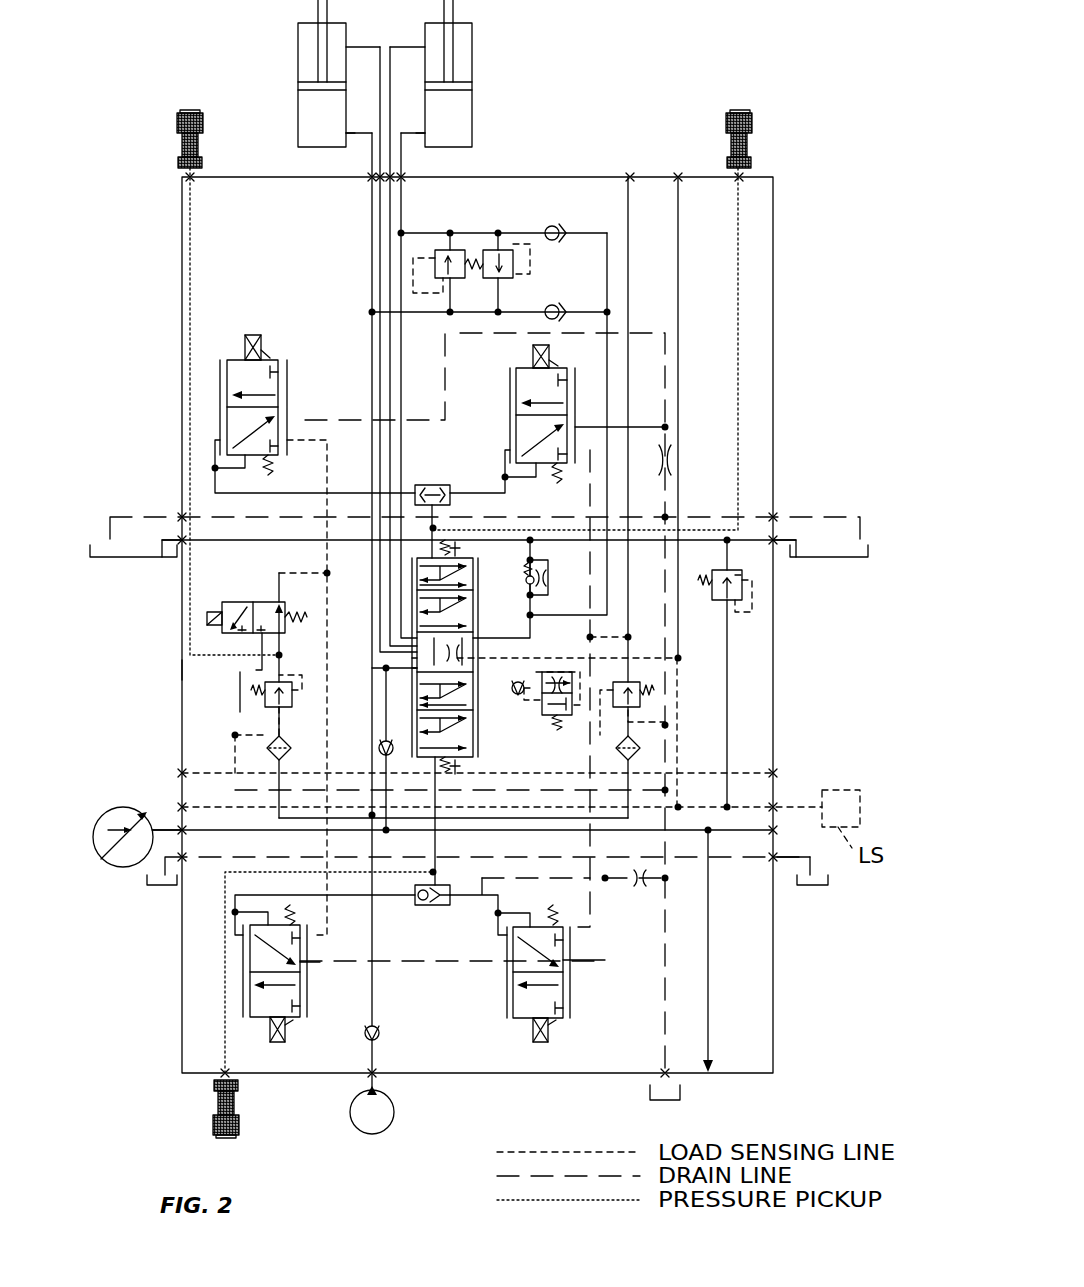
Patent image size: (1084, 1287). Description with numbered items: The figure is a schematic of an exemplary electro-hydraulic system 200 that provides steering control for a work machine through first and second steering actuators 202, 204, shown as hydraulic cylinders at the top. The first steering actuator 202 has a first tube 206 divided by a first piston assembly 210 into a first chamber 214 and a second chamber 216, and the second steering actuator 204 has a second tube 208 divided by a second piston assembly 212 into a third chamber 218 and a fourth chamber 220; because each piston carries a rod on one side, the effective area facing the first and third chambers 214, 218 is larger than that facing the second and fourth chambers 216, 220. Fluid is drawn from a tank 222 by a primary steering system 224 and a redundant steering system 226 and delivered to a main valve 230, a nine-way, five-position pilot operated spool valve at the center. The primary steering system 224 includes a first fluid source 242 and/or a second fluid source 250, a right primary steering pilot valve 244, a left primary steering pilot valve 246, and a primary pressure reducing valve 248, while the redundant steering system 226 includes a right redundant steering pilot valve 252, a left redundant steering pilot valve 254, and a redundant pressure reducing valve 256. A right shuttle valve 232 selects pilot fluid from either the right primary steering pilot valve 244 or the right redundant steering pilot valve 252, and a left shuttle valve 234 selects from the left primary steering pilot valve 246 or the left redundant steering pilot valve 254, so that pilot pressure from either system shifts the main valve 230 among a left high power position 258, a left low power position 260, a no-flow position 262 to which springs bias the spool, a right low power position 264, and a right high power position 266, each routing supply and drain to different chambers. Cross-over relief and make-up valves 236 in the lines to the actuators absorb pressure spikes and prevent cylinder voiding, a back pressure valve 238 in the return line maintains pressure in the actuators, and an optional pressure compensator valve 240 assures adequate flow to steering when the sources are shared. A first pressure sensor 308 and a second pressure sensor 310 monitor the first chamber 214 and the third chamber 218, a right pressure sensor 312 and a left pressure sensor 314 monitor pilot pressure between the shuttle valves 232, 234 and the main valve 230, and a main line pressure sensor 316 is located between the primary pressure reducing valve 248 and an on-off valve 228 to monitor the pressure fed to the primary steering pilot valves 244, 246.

The electro-hydraulic system 200 is at (803, 86).
The first steering actuator 202 is at (284, 88).
The second steering actuator 204 is at (490, 88).
The first tube 206 is at (300, 124).
The second tube 208 is at (474, 112).
The first piston assembly 210 is at (300, 86).
The second piston assembly 212 is at (475, 84).
The first chamber 214 is at (342, 137).
The second chamber 216 is at (303, 52).
The third chamber 218 is at (467, 137).
The fourth chamber 220 is at (465, 60).
The tank 222 is at (158, 566).
The primary steering system 224 is at (185, 673).
The redundant steering system 226 is at (805, 644).
The on-off valve 228 is at (238, 600).
The main valve 230 is at (426, 657).
The right shuttle valve 232 is at (432, 906).
The left shuttle valve 234 is at (432, 484).
The cross-over relief and make-up valves 236 is at (507, 222).
The back pressure valve 238 is at (553, 578).
The pressure compensator valve 240 is at (575, 720).
The first fluid source 242 is at (122, 806).
The right primary steering pilot valve 244 is at (305, 992).
The left primary steering pilot valve 246 is at (287, 402).
The primary pressure reducing valve 248 is at (282, 707).
The second fluid source 250 is at (397, 1110).
The right redundant steering pilot valve 252 is at (572, 990).
The left redundant steering pilot valve 254 is at (510, 415).
The redundant pressure reducing valve 256 is at (655, 692).
The left high power position 258 is at (473, 586).
The left low power position 260 is at (483, 612).
The no-flow position 262 is at (410, 662).
The right low power position 264 is at (483, 712).
The right high power position 266 is at (483, 752).
The first pressure sensor 308 is at (355, 140).
The second pressure sensor 310 is at (415, 140).
The right pressure sensor 312 is at (212, 1112).
The left pressure sensor 314 is at (750, 145).
The main line pressure sensor 316 is at (178, 140).